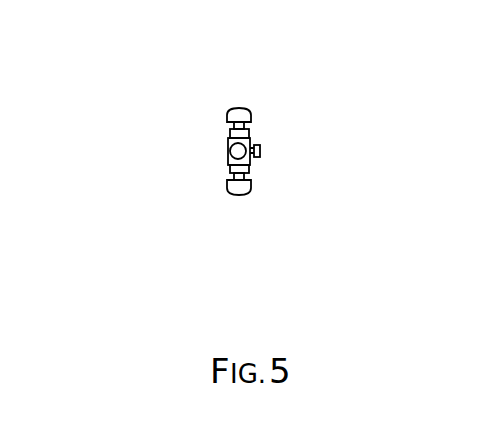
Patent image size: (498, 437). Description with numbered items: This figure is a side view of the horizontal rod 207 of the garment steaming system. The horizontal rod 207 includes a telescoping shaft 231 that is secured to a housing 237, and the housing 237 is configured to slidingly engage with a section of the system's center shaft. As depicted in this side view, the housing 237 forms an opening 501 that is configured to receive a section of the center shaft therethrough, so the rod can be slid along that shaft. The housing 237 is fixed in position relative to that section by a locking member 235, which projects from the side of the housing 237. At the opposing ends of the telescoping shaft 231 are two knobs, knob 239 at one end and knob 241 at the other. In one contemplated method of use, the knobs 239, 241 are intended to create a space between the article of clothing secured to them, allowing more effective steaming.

The horizontal rod 207 is at (142, 71).
The knob 241 is at (246, 107).
The telescoping shaft 231 is at (250, 135).
The housing 237 is at (230, 142).
The locking member 235 is at (261, 151).
The opening 501 is at (250, 161).
The knob 239 is at (235, 196).